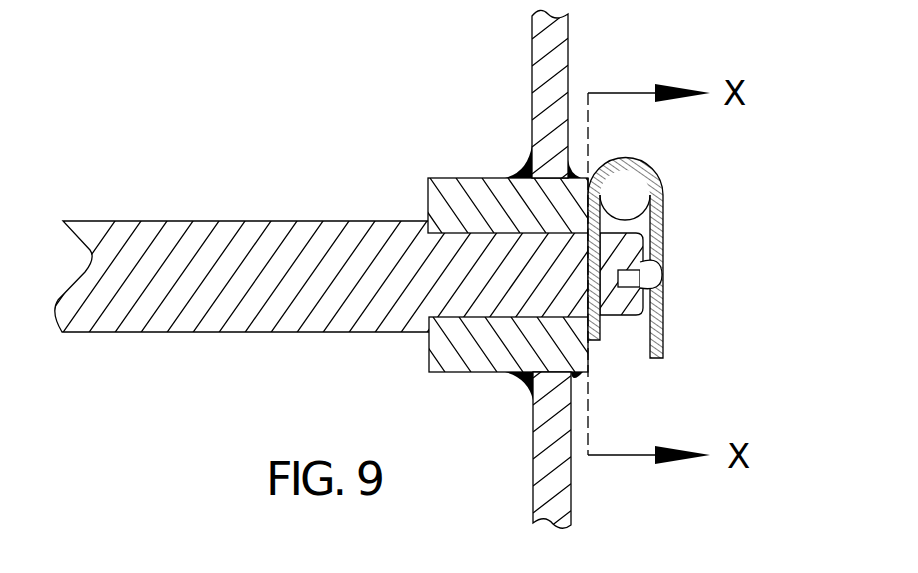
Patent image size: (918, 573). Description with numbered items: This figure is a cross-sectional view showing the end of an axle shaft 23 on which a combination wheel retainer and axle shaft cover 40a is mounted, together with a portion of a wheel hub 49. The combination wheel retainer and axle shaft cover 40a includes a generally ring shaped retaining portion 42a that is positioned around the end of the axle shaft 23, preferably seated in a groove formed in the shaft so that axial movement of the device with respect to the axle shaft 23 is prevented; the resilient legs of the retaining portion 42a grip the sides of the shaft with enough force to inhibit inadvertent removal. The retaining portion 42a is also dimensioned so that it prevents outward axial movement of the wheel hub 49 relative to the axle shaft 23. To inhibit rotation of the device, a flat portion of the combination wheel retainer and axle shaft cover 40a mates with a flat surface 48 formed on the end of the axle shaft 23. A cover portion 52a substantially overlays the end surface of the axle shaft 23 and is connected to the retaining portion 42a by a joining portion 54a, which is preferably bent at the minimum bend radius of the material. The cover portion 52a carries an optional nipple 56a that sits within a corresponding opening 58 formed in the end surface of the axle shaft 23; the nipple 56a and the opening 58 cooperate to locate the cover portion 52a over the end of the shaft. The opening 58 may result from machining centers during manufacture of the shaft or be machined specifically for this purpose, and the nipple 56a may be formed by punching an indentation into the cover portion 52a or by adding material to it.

The axle shaft 23 is at (205, 221).
The flat surface 48 is at (462, 232).
The wheel hub 49 is at (532, 102).
The retaining portion 42a is at (598, 292).
The combination wheel retainer and axle shaft cover 40a is at (685, 330).
The cover portion 52a is at (663, 220).
The joining portion 54a is at (626, 158).
The opening 58 is at (645, 258).
The nipple 56a is at (647, 267).